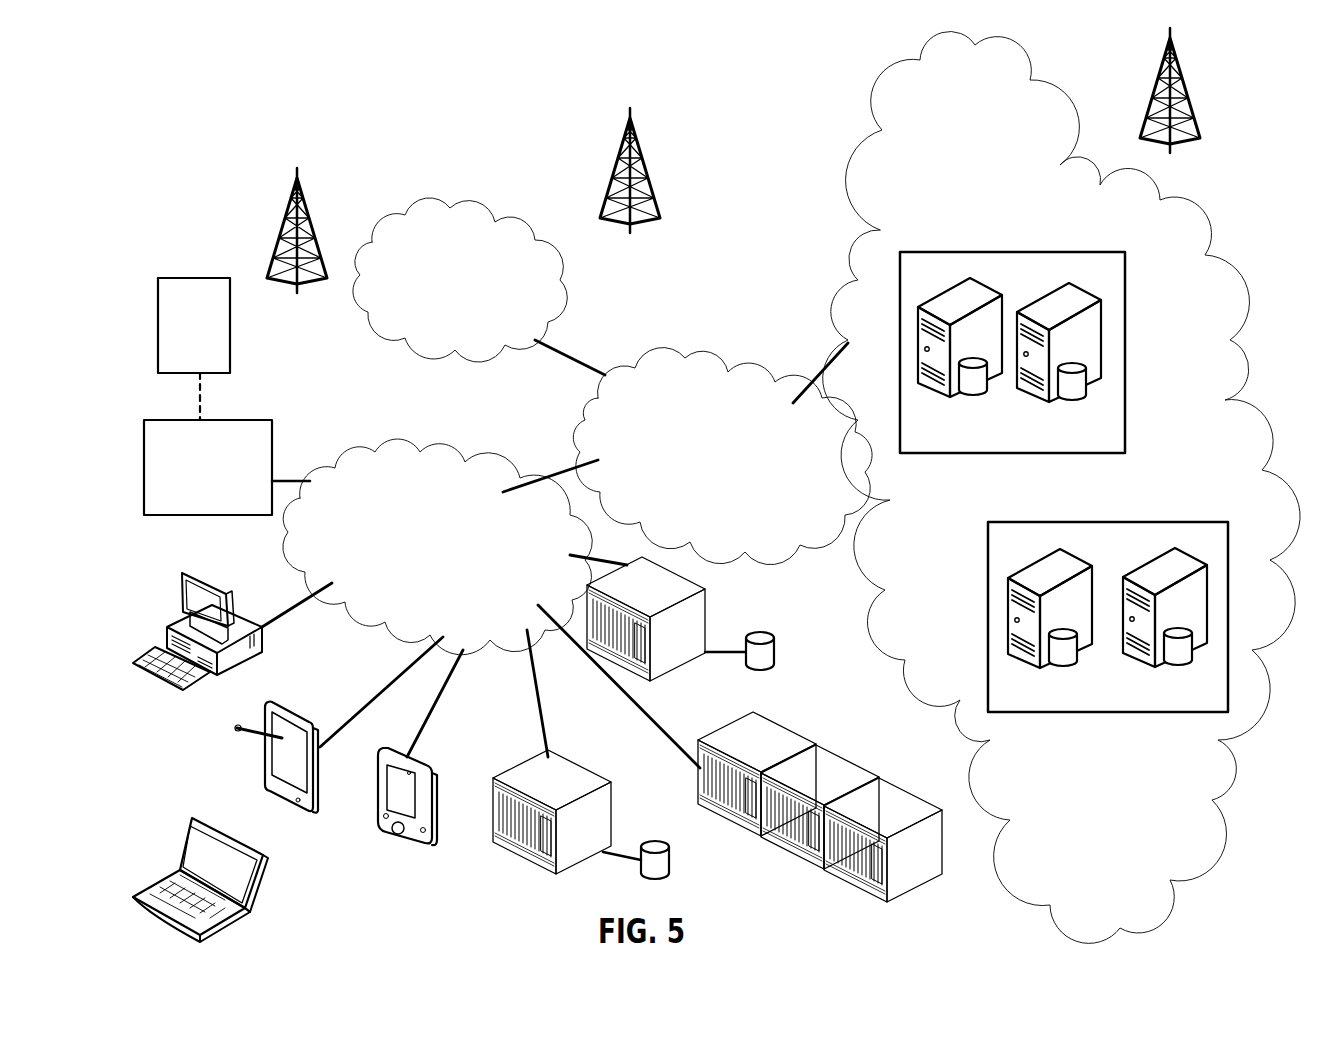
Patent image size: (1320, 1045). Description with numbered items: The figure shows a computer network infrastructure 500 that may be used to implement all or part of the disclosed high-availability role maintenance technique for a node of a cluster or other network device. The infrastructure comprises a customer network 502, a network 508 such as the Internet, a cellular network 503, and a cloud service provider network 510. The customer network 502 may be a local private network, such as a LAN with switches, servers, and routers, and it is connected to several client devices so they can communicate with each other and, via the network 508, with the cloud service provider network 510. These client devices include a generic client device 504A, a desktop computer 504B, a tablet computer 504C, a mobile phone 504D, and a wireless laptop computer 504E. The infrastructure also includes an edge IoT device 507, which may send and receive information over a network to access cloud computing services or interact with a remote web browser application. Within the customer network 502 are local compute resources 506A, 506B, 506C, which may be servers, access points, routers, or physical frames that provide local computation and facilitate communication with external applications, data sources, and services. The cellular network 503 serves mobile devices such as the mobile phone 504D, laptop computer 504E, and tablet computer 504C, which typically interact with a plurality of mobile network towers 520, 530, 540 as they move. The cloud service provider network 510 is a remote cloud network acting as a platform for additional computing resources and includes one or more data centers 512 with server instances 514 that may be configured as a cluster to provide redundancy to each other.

The computer network infrastructure 500 is at (383, 142).
The customer network 502 is at (398, 455).
The cellular network 503 is at (487, 228).
The client device 504A is at (238, 420).
The desktop computer 504B is at (210, 580).
The tablet computer 504C is at (292, 700).
The mobile phone 504D is at (430, 760).
The laptop computer 504E is at (262, 870).
The local compute resource 506A is at (555, 780).
The local compute resource 506B is at (703, 608).
The local compute resource 506C is at (775, 717).
The edge IoT device 507 is at (172, 278).
The network 508 is at (658, 355).
The cloud service provider network 510 is at (1160, 263).
The data center 512 is at (1064, 462).
The server instance 514 is at (968, 396).
The mobile network tower 520 is at (630, 191).
The mobile network tower 530 is at (297, 250).
The mobile network tower 540 is at (1170, 111).